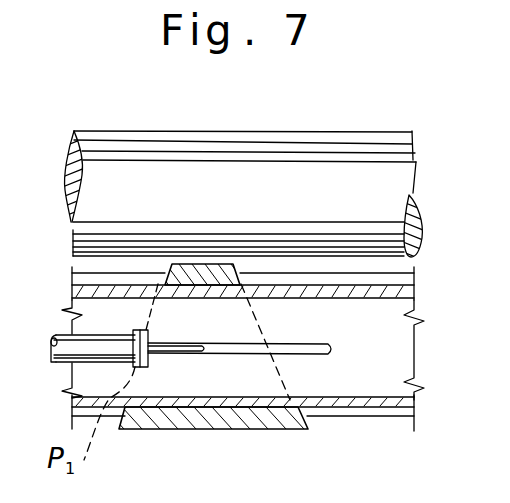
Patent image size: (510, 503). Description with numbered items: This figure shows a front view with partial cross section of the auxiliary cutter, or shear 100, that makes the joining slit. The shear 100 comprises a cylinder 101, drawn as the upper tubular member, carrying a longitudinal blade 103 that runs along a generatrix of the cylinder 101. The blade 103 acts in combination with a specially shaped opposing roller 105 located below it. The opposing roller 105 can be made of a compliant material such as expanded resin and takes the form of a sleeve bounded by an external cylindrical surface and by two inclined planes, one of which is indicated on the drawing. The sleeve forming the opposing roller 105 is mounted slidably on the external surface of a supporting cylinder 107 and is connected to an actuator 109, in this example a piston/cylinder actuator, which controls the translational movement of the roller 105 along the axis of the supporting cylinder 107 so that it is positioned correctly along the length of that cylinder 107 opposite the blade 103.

The shear 100 is at (429, 181).
The cylinder 101 is at (83, 234).
The longitudinal blade 103 is at (127, 104).
The opposing roller 105 is at (290, 429).
The supporting cylinder 107 is at (390, 398).
The actuator 109 is at (157, 281).